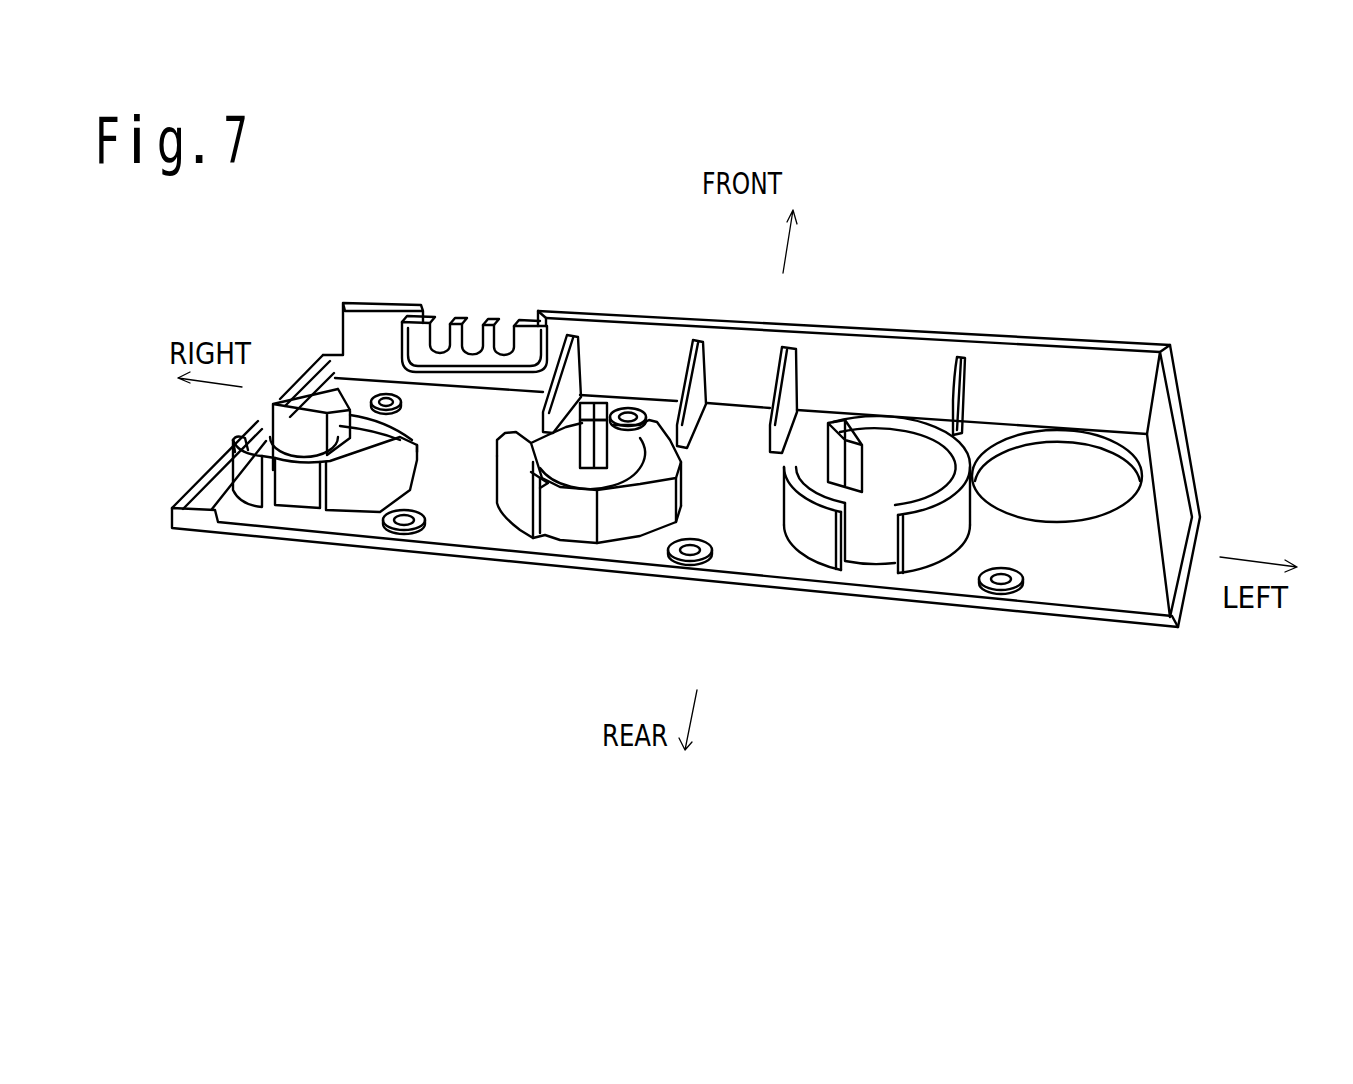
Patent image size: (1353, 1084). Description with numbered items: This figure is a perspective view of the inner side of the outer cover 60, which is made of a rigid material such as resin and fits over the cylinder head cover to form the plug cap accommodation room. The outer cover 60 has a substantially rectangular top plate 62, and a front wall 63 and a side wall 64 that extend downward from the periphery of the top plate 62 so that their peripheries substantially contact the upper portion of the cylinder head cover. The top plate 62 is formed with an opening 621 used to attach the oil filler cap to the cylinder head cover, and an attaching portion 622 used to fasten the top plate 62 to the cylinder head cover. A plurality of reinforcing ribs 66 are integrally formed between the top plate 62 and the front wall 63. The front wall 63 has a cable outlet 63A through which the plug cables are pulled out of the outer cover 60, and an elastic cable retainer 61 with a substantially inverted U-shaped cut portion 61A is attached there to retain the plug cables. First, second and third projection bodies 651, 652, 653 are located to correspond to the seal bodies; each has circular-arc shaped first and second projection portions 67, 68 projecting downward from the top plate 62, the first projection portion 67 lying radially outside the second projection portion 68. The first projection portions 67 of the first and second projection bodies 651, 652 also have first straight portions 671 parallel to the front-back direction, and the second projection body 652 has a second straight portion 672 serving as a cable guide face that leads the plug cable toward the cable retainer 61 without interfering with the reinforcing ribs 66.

The outer cover 60 is at (1147, 290).
The cable retainer 61 is at (469, 288).
The cut portion 61A is at (447, 345).
The top plate 62 is at (447, 513).
The front wall 63 is at (943, 330).
The cable outlet 63A is at (513, 360).
The side wall 64 is at (240, 442).
The first projection body 651 is at (255, 528).
The second projection body 652 is at (633, 556).
The third projection body 653 is at (807, 585).
The reinforcing ribs 66 is at (583, 380).
The first projection portion 67 is at (310, 375).
The first straight portion 671 is at (393, 518).
The second straight portion 672 is at (603, 398).
The second projection portion 68 is at (268, 425).
The opening 621 is at (1063, 520).
The attaching portion 622 is at (992, 597).